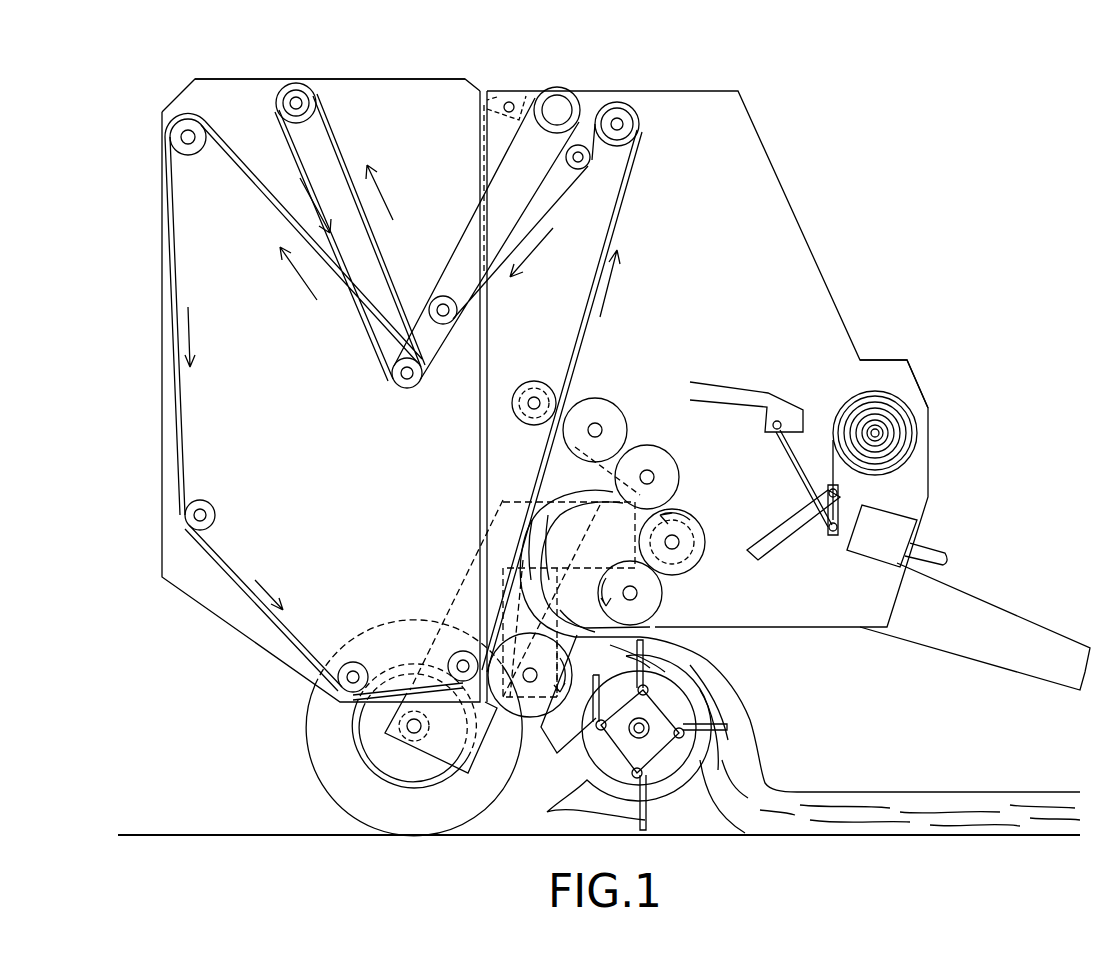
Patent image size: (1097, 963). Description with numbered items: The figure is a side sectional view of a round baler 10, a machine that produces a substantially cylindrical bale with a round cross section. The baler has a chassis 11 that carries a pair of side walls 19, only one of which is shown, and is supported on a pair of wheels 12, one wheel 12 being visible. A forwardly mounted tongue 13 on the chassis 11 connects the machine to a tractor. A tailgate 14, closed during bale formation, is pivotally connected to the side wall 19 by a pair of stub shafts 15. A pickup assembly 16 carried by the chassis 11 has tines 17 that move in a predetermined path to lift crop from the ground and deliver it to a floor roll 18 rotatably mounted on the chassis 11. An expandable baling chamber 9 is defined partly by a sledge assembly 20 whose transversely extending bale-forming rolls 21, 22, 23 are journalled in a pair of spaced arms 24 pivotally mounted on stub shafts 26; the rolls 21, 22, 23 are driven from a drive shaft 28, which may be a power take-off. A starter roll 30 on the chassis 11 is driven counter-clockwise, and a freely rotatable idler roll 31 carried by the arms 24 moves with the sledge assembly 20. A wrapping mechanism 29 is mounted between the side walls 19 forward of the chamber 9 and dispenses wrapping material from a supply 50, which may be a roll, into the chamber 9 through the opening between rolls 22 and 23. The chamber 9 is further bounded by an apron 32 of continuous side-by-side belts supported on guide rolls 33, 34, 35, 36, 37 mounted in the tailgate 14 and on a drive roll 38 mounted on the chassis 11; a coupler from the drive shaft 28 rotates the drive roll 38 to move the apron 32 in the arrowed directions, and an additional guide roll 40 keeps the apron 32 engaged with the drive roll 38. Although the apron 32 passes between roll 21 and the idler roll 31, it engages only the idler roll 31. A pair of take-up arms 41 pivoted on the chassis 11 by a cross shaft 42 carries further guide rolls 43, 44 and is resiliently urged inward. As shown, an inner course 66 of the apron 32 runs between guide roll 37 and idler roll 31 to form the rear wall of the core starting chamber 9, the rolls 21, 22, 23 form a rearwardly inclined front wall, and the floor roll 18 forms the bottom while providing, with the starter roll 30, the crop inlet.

The baling chamber 9 is at (366, 528).
The round baler 10 is at (862, 128).
The chassis 11 is at (497, 512).
The wheel 12 is at (332, 766).
The tongue 13 is at (1020, 622).
The tailgate 14 is at (405, 102).
The stub shaft 15 is at (509, 107).
The pickup assembly 16 is at (792, 713).
The tines 17 is at (553, 810).
The floor roll 18 is at (533, 710).
The side wall 19 is at (734, 246).
The sledge assembly 20 is at (711, 420).
The bale-forming roll 21 is at (598, 418).
The bale-forming roll 22 is at (658, 490).
The bale-forming roll 23 is at (680, 546).
The arms 24 is at (613, 460).
The stub shafts 26 is at (688, 560).
The drive shaft 28 is at (932, 548).
The wrapping mechanism 29 is at (832, 380).
The starter roll 30 is at (645, 595).
The idler roll 31 is at (527, 404).
The apron 32 is at (199, 426).
The guide roll 33 is at (297, 92).
The guide roll 34 is at (178, 142).
The guide roll 35 is at (215, 512).
The guide roll 36 is at (350, 662).
The guide roll 37 is at (463, 655).
The drive roll 38 is at (625, 125).
The guide roll 40 is at (586, 160).
The take-up arm 41 is at (517, 162).
The cross shaft 42 is at (557, 110).
The guide roll 43 is at (402, 388).
The guide roll 44 is at (445, 296).
The supply of wrapping material 50 is at (905, 412).
The inner course 66 is at (497, 607).